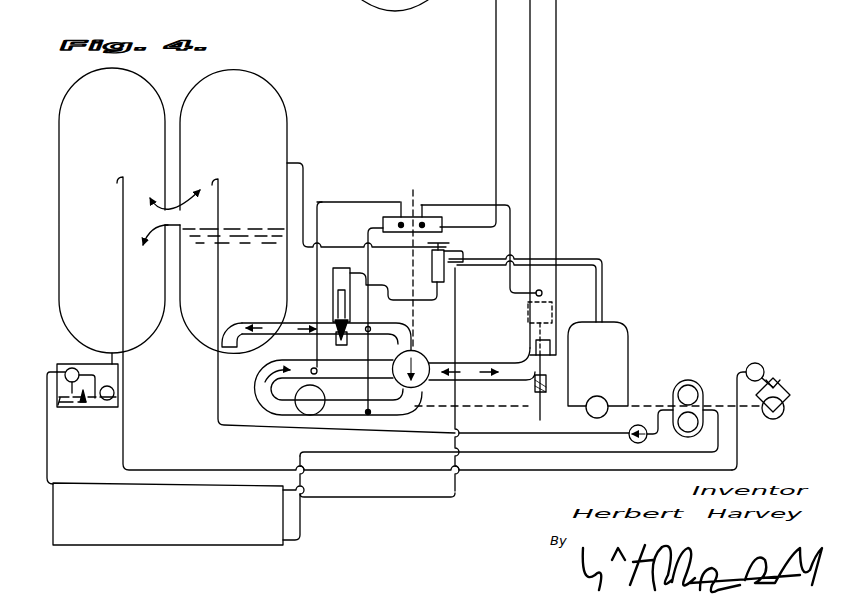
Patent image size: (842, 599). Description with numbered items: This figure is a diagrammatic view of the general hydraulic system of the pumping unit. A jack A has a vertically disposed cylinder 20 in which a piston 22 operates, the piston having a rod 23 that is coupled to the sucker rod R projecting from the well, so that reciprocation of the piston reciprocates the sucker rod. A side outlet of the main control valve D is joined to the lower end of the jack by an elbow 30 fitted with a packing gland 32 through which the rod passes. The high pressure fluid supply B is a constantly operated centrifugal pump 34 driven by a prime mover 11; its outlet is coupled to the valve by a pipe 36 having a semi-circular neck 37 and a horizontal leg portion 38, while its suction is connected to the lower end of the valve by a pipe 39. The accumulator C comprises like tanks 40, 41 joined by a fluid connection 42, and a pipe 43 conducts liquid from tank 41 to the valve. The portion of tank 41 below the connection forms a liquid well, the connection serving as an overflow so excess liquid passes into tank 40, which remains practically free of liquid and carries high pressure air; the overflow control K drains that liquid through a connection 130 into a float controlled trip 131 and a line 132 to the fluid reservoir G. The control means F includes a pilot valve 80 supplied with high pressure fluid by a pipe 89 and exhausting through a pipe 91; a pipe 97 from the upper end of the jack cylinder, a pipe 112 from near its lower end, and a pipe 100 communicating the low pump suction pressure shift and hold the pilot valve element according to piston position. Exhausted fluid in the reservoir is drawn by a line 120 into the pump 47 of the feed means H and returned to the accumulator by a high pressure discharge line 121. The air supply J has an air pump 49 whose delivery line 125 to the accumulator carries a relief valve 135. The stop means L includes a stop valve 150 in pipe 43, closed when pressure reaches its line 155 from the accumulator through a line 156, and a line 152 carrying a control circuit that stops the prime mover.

The tank 40 is at (98, 88).
The tank 41 is at (292, 133).
The pressure accumulator C is at (259, 212).
The fluid connection 42 is at (180, 204).
The pipe 43 is at (290, 318).
The line 156 is at (305, 172).
The pipe 97 is at (496, 78).
The cylinder 20 is at (548, 133).
The jack A is at (566, 177).
The pipe 112 is at (490, 208).
The pipe 89 is at (366, 203).
The pilot valve 80 is at (412, 205).
The control means F is at (423, 215).
The pipe 100 is at (366, 234).
The leg portion 38 is at (348, 366).
The stop valve 150 is at (332, 298).
The line 155 is at (392, 285).
The stop means L is at (450, 282).
The line 152 is at (583, 262).
The piston 22 is at (545, 293).
The rod 23 is at (527, 345).
The prime mover 11 is at (633, 340).
The high pressure discharge line 121 is at (606, 424).
The main control valve D is at (422, 353).
The pipe 36 is at (294, 364).
The semi-circular neck 37 is at (258, 386).
The centrifugal motivating pump 34 is at (322, 388).
The pipe 39 is at (403, 421).
The high pressure fluid supply B is at (290, 403).
The elbow 30 is at (494, 383).
The sucker rod R is at (528, 389).
The packing gland 32 is at (547, 382).
The connection 130 is at (110, 357).
The float controlled trip 131 is at (118, 400).
The overflow control K is at (86, 402).
The line 132 is at (48, 462).
The fluid reservoir G is at (168, 514).
The line 120 is at (300, 516).
The exhaust pipe 91 is at (385, 498).
The pump 47 is at (673, 396).
The liquid make-up or feed means H is at (692, 380).
The delivery line 125 is at (740, 455).
The relief valve 135 is at (757, 363).
The air supply J is at (784, 391).
The air pump 49 is at (779, 420).